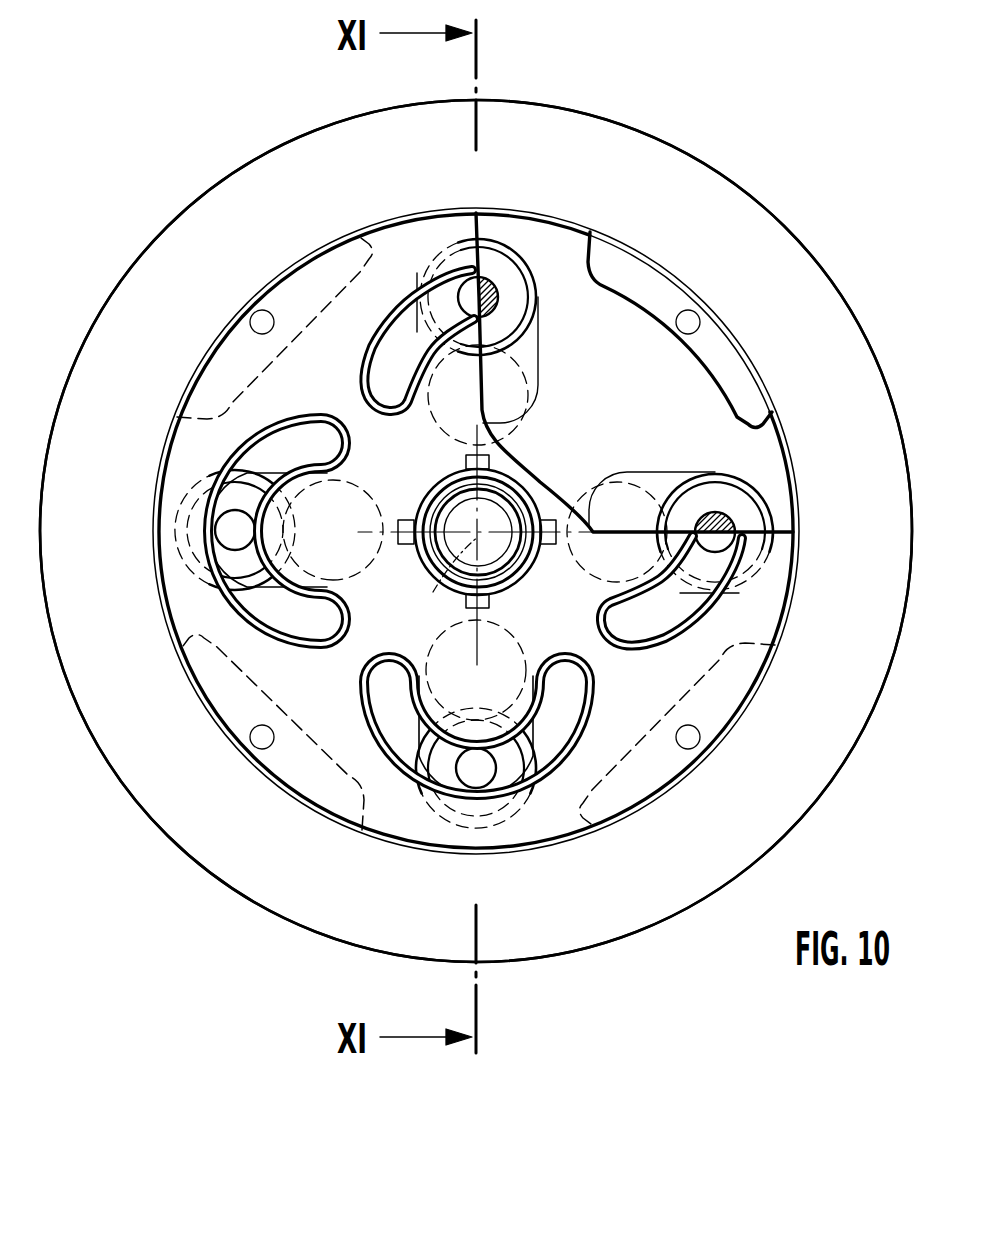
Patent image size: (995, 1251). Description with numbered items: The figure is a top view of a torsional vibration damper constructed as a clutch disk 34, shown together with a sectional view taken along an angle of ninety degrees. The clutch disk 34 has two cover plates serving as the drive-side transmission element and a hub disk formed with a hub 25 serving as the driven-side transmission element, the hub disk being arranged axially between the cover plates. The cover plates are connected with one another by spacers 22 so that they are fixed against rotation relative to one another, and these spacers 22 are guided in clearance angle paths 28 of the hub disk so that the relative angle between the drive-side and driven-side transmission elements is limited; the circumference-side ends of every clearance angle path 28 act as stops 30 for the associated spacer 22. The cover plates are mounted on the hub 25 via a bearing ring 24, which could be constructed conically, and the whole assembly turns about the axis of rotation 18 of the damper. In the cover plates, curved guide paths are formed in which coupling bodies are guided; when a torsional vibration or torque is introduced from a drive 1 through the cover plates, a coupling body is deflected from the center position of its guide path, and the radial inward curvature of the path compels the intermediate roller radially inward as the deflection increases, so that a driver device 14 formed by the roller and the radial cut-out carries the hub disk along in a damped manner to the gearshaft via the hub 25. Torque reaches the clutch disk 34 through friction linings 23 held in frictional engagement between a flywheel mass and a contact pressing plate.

The drive 1 is at (660, 671).
The driver device 14 is at (543, 328).
The axis of rotation 18 is at (434, 592).
The spacers 22 is at (692, 313).
The friction linings 23 is at (191, 843).
The bearing ring 24 is at (517, 494).
The hub 25 is at (512, 570).
The clearance angle paths 28 is at (729, 362).
The stops 30 is at (601, 262).
The clutch disk 34 is at (213, 168).